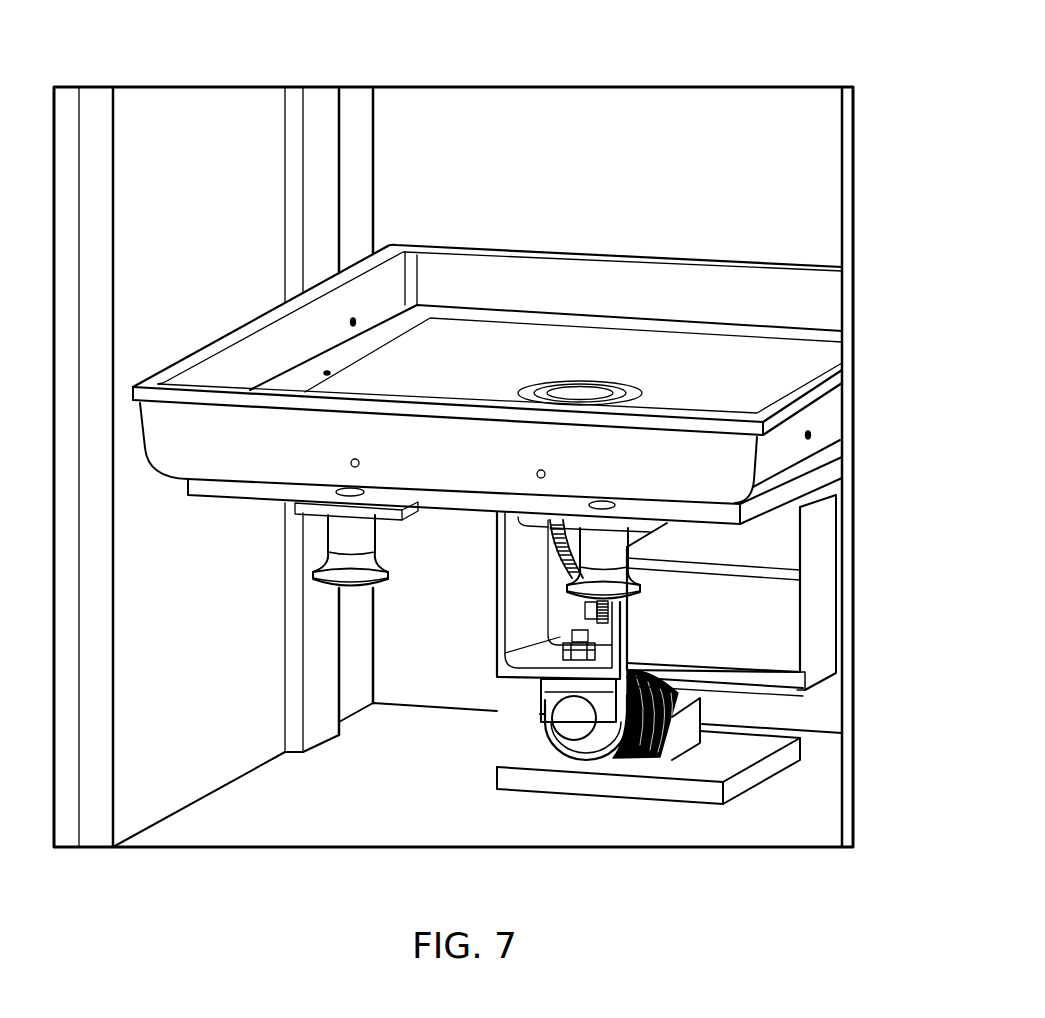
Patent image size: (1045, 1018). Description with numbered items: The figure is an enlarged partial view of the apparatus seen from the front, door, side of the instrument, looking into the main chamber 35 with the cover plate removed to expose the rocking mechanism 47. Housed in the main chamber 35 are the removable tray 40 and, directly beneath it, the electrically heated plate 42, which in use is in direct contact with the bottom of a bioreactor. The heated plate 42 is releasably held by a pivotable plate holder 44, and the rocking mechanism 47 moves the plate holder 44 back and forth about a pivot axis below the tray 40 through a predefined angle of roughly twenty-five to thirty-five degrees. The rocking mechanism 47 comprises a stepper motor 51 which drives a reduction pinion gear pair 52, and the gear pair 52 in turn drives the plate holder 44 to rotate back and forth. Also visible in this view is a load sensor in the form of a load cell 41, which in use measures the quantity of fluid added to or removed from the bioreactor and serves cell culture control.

The main chamber 35 is at (573, 113).
The removable tray 40 is at (818, 307).
The electrically heated plate 42 is at (440, 500).
The pivotable plate holder 44 is at (510, 626).
The reduction pinion gear pair 52 is at (550, 552).
The load cell 41 is at (573, 720).
The stepper motor 51 is at (818, 627).
The rocking mechanism 47 is at (735, 690).